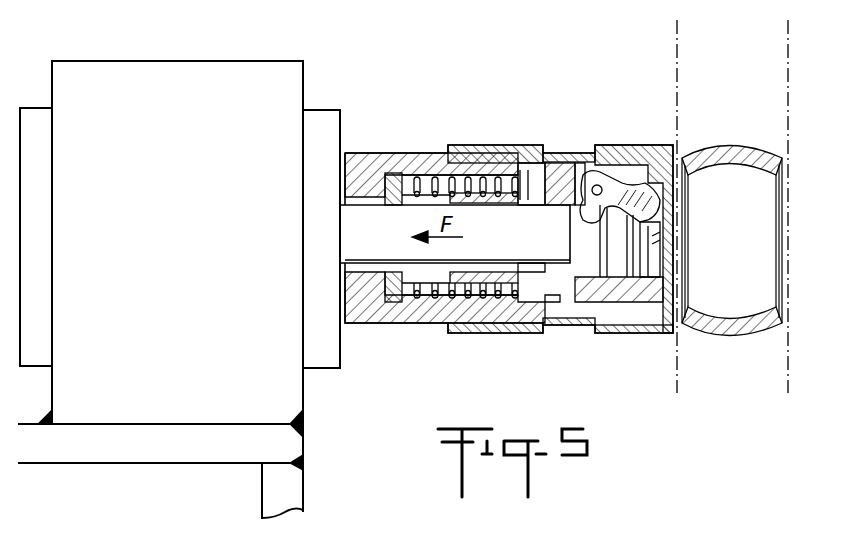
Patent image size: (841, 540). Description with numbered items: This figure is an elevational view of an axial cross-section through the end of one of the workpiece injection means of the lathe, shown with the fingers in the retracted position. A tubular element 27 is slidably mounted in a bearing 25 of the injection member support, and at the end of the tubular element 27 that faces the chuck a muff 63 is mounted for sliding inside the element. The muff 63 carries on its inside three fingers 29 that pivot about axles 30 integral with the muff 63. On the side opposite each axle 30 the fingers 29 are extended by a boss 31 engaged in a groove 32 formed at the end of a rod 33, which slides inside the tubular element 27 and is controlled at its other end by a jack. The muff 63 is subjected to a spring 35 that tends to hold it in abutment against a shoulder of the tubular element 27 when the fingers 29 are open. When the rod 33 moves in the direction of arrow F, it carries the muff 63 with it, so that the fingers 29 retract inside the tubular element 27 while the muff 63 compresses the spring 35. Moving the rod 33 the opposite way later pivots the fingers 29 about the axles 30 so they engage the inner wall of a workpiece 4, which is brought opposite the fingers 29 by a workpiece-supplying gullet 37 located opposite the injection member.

The bearing 25 is at (173, 75).
The tubular element 27 is at (398, 153).
The fingers 29 is at (612, 178).
The axles 30 is at (585, 180).
The boss 31 is at (590, 221).
The groove 32 is at (628, 236).
The rod 33 is at (390, 244).
The spring 35 is at (425, 295).
The workpiece-supplying gullet 37 is at (694, 70).
The workpiece 4 is at (727, 150).
The muff 63 is at (578, 302).